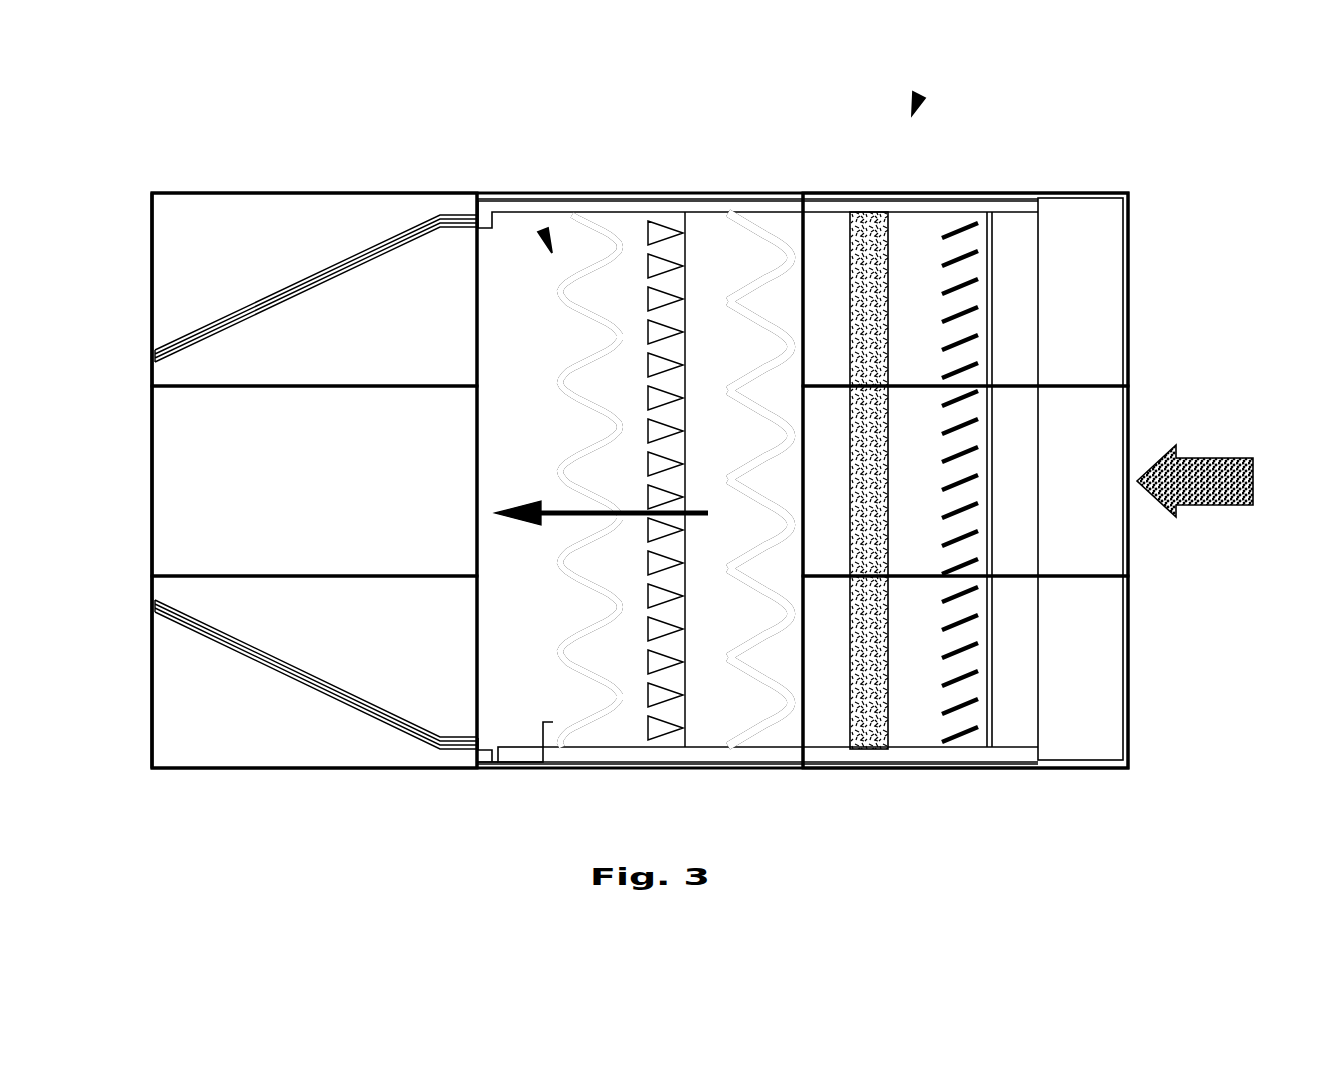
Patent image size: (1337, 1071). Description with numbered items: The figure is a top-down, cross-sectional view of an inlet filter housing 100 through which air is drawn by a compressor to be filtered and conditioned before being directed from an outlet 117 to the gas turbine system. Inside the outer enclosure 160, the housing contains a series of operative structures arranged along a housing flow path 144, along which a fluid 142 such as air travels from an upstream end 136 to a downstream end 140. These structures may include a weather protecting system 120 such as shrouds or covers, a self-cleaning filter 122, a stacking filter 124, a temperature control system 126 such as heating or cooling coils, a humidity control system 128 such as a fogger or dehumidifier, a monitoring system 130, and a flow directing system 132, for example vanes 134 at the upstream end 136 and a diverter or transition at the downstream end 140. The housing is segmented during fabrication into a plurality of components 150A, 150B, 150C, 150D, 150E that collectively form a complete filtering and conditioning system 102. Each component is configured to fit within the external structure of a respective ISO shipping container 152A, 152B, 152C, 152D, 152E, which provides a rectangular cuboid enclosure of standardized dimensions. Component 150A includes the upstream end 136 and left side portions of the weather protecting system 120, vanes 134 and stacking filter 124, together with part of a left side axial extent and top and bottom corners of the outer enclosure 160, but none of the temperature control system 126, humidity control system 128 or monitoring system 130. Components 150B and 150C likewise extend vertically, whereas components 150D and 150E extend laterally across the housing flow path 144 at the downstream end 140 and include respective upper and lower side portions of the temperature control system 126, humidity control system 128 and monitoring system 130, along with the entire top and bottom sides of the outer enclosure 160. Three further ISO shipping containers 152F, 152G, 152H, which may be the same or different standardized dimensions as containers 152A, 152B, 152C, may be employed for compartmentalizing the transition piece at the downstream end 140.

The inlet filter housing 100 is at (918, 98).
The filtering and conditioning system 102 is at (543, 235).
The outlet 117 is at (152, 550).
The weather protecting system 120 is at (1083, 222).
The self-cleaning filter 122 is at (767, 242).
The stacking filter 124 is at (877, 230).
The temperature control system 126 is at (594, 278).
The humidity control system 128 is at (668, 255).
The monitoring system 130 is at (517, 760).
The flow directing system 132 is at (316, 482).
The vanes 134 is at (955, 255).
The upstream end 136 is at (1108, 308).
The downstream end 140 is at (298, 282).
The fluid 142 is at (1208, 487).
The housing flow path 144 is at (545, 515).
The outer enclosure 160 is at (713, 212).
The component 150A is at (1047, 672).
The ISO shipping container 152A is at (1200, 648).
The component 150B is at (1063, 481).
The ISO shipping container 152B is at (1130, 442).
The component 150C is at (1064, 289).
The ISO shipping container 152C is at (1130, 350).
The component 150D is at (722, 414).
The ISO shipping container 152D is at (722, 414).
The component 150E is at (722, 414).
The ISO shipping container 152E is at (638, 197).
The ISO shipping container 152F is at (152, 698).
The ISO shipping container 152G is at (152, 496).
The ISO shipping container 152H is at (152, 290).